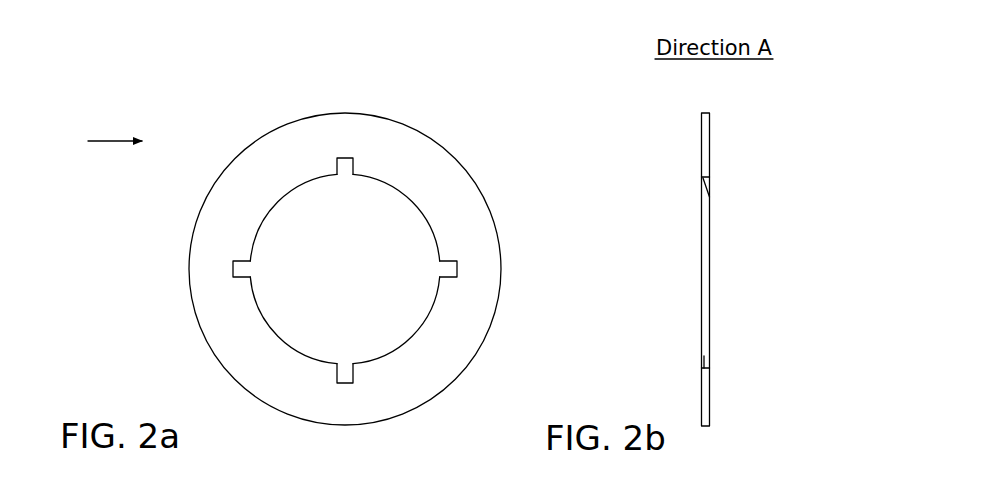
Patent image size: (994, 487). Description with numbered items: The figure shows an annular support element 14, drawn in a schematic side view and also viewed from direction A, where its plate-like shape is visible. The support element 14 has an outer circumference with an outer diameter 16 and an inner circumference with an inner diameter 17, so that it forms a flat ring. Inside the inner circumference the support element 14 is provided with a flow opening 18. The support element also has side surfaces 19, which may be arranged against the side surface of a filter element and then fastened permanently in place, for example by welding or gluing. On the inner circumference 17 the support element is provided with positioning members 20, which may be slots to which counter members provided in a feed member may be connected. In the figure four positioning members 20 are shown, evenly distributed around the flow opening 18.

In FIG. 2a, the annular support element 14 is at (256, 78).
In FIG. 2b, the annular support element 14 is at (620, 117).
In FIG. 2a, the outer diameter 16 is at (197, 322).
In FIG. 2b, the outer diameter 16 is at (705, 113).
In FIG. 2a, the inner diameter 17 is at (263, 318).
In FIG. 2b, the inner diameter 17 is at (707, 188).
In FIG. 2a, the flow opening 18 is at (390, 232).
In FIG. 2a, the side surfaces 19 is at (253, 355).
In FIG. 2b, the side surfaces 19 is at (709, 152).
In FIG. 2a, the positioning members 20 is at (349, 170).